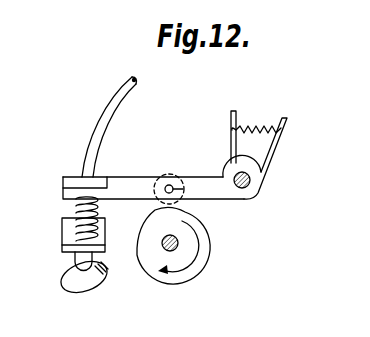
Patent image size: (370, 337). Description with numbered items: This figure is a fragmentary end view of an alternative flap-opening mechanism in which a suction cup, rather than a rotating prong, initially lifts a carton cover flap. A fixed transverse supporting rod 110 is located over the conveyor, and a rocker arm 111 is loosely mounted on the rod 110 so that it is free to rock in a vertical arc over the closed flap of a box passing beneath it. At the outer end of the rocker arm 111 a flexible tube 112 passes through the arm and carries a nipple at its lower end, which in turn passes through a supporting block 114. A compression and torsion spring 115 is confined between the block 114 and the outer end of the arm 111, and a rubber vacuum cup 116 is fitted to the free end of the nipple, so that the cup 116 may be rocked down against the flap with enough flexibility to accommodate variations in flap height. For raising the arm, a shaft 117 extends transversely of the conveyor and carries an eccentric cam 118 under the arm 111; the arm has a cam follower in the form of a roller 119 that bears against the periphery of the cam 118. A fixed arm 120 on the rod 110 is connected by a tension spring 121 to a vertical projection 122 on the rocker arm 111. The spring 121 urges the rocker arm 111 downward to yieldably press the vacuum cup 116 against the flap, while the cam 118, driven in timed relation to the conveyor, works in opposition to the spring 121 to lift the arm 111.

The supporting rod 110 is at (250, 181).
The rocker arm 111 is at (128, 177).
The flexible tube 112 is at (98, 148).
The supporting block 114 is at (62, 240).
The compression and torsion spring 115 is at (77, 211).
The rubber vacuum cup 116 is at (91, 280).
The shaft 117 is at (178, 242).
The eccentric cam 118 is at (204, 262).
The roller 119 is at (178, 173).
The fixed arm 120 is at (234, 110).
The tension spring 121 is at (257, 128).
The vertical projection 122 is at (288, 127).